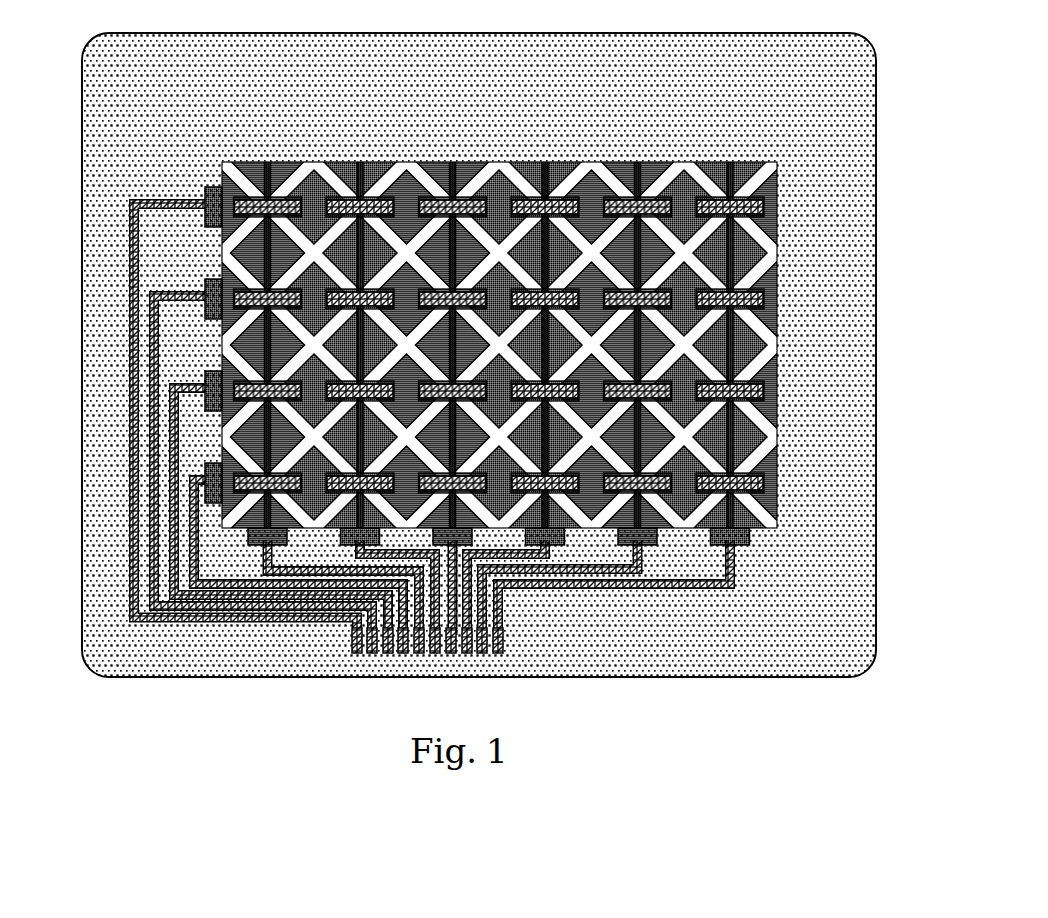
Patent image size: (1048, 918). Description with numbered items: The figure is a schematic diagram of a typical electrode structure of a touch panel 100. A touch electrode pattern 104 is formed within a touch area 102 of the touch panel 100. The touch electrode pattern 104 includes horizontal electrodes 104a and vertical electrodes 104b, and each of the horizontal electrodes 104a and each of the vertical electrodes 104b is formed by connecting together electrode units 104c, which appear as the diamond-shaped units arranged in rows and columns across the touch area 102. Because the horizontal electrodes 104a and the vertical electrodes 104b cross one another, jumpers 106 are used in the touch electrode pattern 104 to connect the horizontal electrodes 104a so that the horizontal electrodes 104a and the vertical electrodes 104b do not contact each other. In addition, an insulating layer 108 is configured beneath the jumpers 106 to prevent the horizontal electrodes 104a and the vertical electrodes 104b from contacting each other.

The touch panel 100 is at (554, 345).
The touch area 102 is at (707, 262).
The touch electrode pattern 104 is at (597, 345).
The horizontal electrodes 104a is at (790, 403).
The vertical electrodes 104b is at (764, 330).
The electrode units 104c is at (742, 358).
The jumpers 106 is at (768, 211).
The insulating layer 108 is at (746, 195).